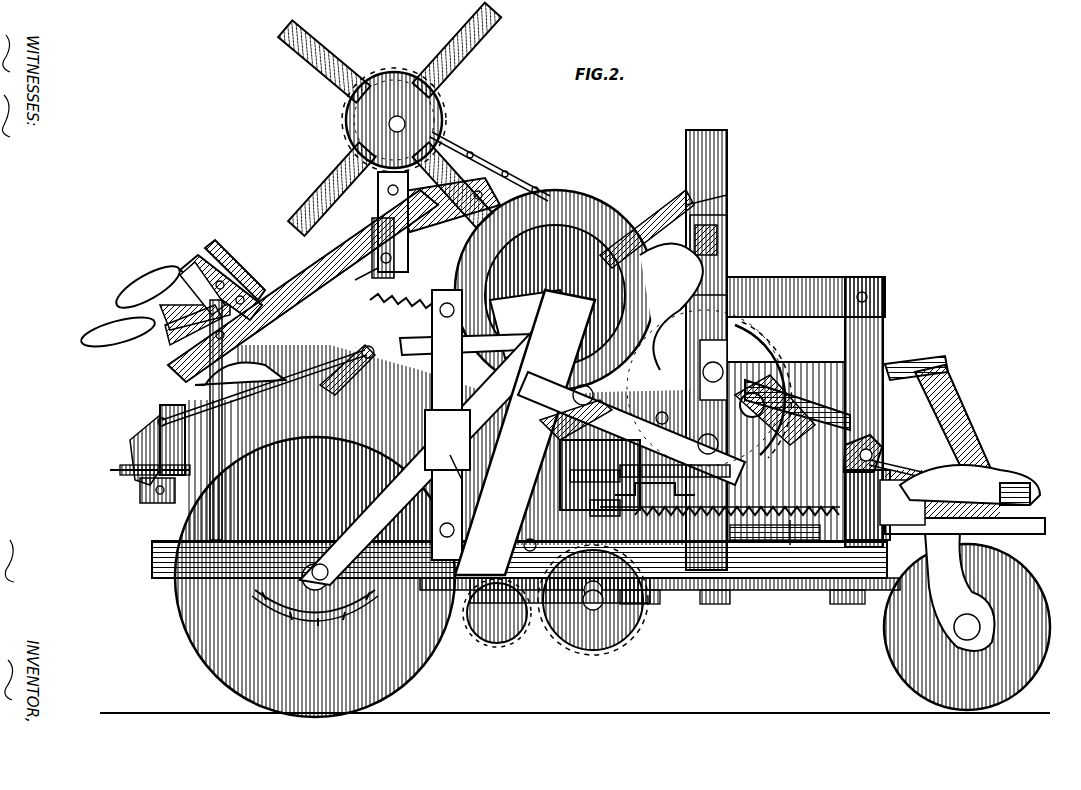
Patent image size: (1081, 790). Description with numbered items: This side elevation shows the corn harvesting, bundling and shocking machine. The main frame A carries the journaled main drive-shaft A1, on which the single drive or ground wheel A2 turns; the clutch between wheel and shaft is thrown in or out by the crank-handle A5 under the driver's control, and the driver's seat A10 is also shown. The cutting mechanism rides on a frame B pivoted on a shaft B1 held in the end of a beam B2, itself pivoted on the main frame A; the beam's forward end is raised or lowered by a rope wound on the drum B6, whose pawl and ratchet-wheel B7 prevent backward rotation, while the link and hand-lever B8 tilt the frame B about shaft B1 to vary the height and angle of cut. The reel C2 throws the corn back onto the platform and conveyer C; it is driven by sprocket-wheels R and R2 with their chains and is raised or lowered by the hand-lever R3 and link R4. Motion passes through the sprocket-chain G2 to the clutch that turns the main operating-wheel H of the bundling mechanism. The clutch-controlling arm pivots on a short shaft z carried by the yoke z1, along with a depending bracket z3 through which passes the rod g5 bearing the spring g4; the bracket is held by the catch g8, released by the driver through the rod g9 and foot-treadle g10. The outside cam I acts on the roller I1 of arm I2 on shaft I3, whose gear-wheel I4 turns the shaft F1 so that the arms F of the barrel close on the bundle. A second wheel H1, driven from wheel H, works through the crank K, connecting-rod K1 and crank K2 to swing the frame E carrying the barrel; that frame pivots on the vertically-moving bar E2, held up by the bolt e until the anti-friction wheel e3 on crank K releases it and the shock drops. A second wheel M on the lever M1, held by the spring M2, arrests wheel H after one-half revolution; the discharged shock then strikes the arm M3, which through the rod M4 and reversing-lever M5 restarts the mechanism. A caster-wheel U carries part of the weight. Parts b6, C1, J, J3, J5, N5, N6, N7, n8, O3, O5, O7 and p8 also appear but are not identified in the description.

The main frame A is at (160, 520).
The main drive-shaft A1 is at (420, 455).
The drive or ground wheel A2 is at (315, 577).
The crank-handle A5 is at (162, 415).
The seat A10 is at (240, 420).
The cutter frame B is at (493, 613).
The shaft B1 is at (580, 635).
The beam B2 is at (545, 620).
The drum B6 is at (142, 485).
The pawl and ratchet-wheel B7 is at (142, 440).
The link and hand-lever B8 is at (165, 335).
The gear shaft b6 is at (640, 608).
The platform and conveyer C is at (300, 625).
The gripper arm C1 is at (130, 288).
The reel C2 is at (389, 119).
The frame E is at (882, 420).
The vertically-moving bar or frame E2 is at (727, 165).
The bolt or lock e is at (720, 240).
The anti-friction wheel e3 is at (664, 412).
The arms of the barrel F is at (720, 604).
The shaft F1 is at (781, 410).
The sprocket-chain G2 is at (325, 610).
The spring g4 is at (405, 297).
The rod g5 is at (480, 185).
The catch g8 is at (485, 344).
The rod g9 is at (328, 350).
The foot-treadle g10 is at (141, 464).
The main operating-wheel H is at (545, 205).
The second wheel H1 is at (713, 388).
The outside cam I is at (590, 225).
The roller I1 is at (523, 324).
The arm I2 is at (447, 425).
The shaft I3 is at (433, 463).
The gear-wheel I4 is at (437, 440).
The bracket J is at (885, 505).
The pin J3 is at (789, 542).
The slide J5 is at (775, 544).
The crank K is at (713, 362).
The connecting-rod K1 is at (631, 428).
The crank K2 is at (590, 455).
The second wheel M is at (664, 485).
The lever M1 is at (650, 466).
The spring M2 is at (715, 522).
The lever or arm M3 is at (1030, 494).
The rod M4 is at (980, 460).
The reversing-lever M5 is at (880, 445).
The caster plate N5 is at (1010, 540).
The brace N6 is at (955, 405).
The bar N7 is at (797, 389).
The pin n8 is at (353, 280).
The link O3 is at (350, 340).
The brace bar O5 is at (660, 205).
The pin O7 is at (727, 197).
The lever bar p8 is at (525, 432).
The sprocket-wheel R is at (394, 120).
The sprocket-wheels R2 is at (505, 190).
The hand-lever R3 is at (214, 279).
The link R4 is at (303, 286).
The caster-wheel U is at (967, 621).
The short shaft z is at (378, 198).
The yoke z1 is at (372, 240).
The depending bracket z3 is at (380, 258).